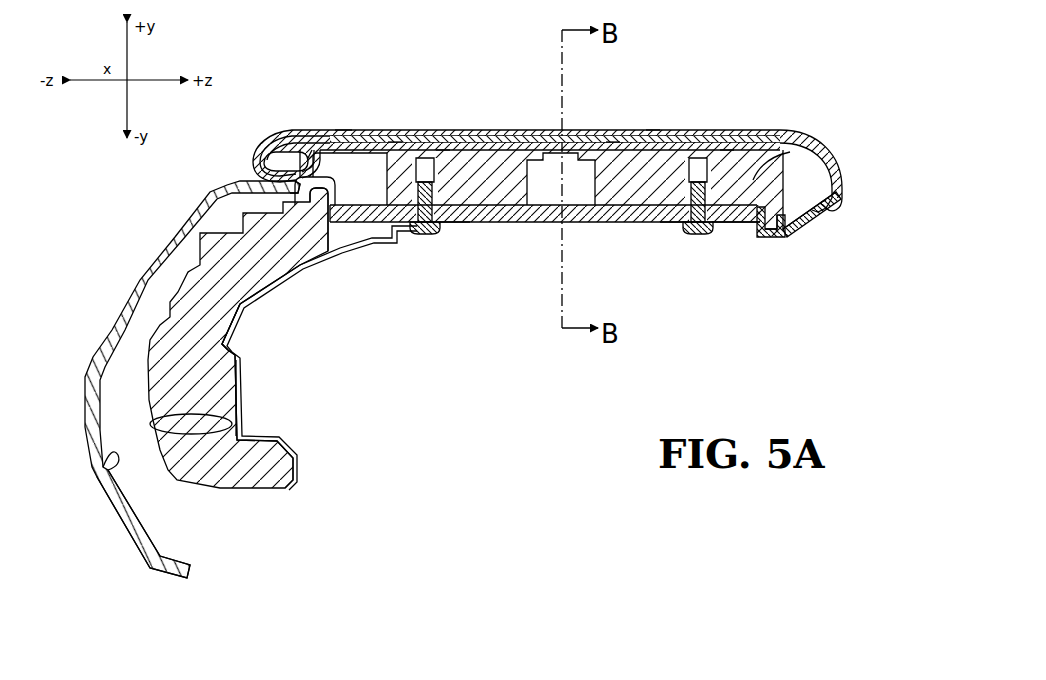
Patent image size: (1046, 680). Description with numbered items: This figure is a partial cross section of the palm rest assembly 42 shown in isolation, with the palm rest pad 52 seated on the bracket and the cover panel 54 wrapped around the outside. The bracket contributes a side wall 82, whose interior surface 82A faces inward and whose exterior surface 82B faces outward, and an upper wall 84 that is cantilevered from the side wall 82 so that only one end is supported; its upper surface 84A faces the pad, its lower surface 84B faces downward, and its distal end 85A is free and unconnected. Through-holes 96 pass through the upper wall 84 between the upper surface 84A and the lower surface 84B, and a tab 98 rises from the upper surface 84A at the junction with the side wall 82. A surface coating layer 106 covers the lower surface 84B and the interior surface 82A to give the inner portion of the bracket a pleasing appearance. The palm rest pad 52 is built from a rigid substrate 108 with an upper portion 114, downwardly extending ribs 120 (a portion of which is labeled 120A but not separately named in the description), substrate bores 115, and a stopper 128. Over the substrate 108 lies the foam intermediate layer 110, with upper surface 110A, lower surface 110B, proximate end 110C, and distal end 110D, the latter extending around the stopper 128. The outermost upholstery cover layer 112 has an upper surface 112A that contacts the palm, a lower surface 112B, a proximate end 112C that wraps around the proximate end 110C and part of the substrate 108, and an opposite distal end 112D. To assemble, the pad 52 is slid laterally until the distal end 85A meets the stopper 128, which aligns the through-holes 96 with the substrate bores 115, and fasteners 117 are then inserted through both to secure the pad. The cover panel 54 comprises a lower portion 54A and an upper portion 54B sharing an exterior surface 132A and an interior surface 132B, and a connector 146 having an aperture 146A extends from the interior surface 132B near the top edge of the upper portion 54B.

The palm rest assembly 42 is at (110, 172).
The palm rest pad 52 is at (873, 98).
The cover panel 54 is at (122, 585).
The lower portion 54A is at (108, 523).
The upper portion 54B is at (230, 358).
The side wall 82 is at (205, 378).
The interior surface 82A is at (228, 347).
The exterior surface 82B is at (237, 434).
The upper wall 84 is at (627, 210).
The upper surface 84A is at (733, 227).
The lower surface 84B is at (763, 238).
The distal end 85A is at (807, 217).
The through-holes 96 is at (459, 220).
The tab 98 is at (287, 200).
The surface coating layer 106 is at (238, 397).
The substrate 108 is at (823, 147).
The intermediate layer 110 is at (378, 147).
The upper surface 110A is at (343, 135).
The lower surface 110B is at (395, 147).
The proximate end 110C is at (278, 163).
The distal end 110D is at (803, 152).
The cover layer 112 is at (677, 135).
The upper surface 112A is at (653, 130).
The lower surface 112B is at (613, 137).
The proximate end 112C is at (289, 150).
The distal end 112D is at (830, 217).
The upper portion 114 is at (511, 210).
The substrate bores 115 is at (443, 148).
The fasteners 117 is at (427, 240).
The ribs 120 is at (525, 180).
The opening 120A is at (487, 148).
The stopper 128 is at (790, 232).
The exterior surface 132A is at (82, 420).
The interior surface 132B is at (113, 458).
The connector 146 is at (348, 246).
The aperture 146A is at (307, 243).